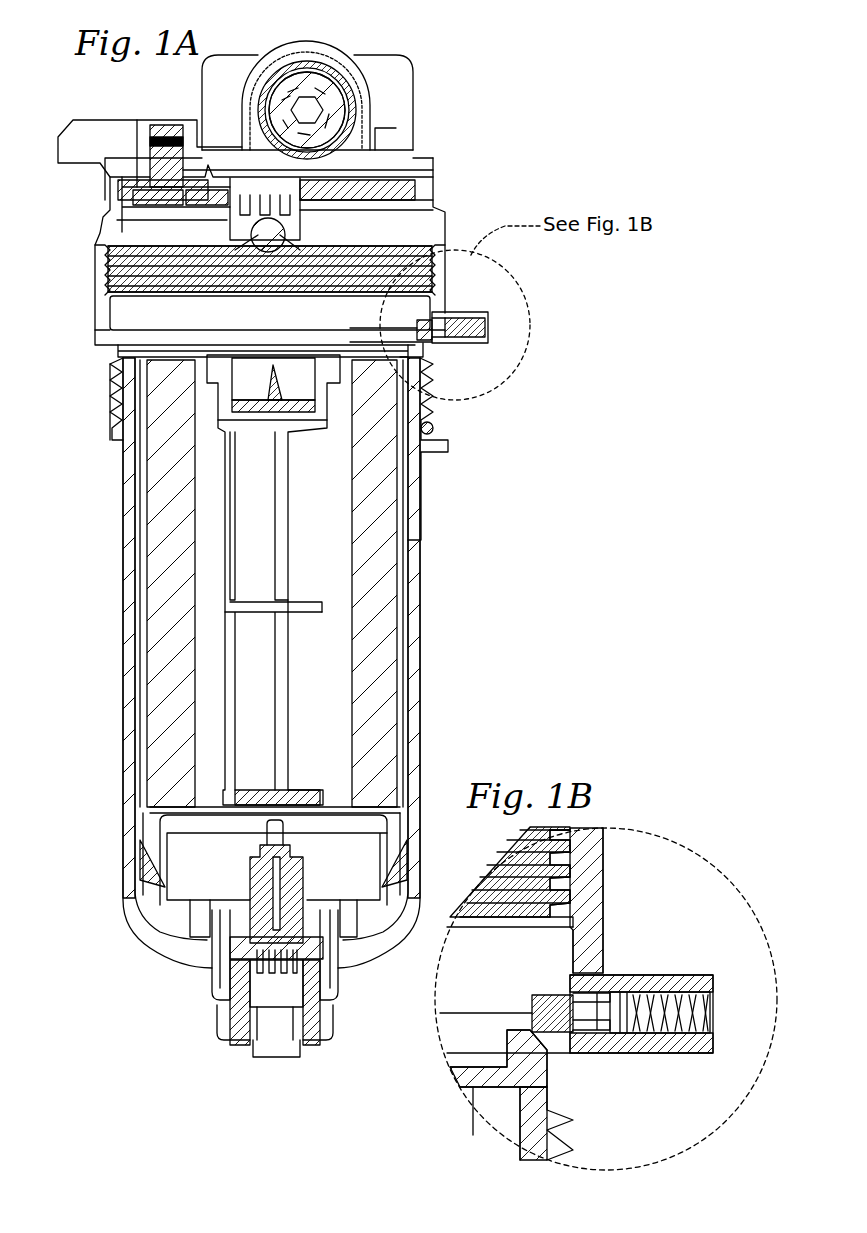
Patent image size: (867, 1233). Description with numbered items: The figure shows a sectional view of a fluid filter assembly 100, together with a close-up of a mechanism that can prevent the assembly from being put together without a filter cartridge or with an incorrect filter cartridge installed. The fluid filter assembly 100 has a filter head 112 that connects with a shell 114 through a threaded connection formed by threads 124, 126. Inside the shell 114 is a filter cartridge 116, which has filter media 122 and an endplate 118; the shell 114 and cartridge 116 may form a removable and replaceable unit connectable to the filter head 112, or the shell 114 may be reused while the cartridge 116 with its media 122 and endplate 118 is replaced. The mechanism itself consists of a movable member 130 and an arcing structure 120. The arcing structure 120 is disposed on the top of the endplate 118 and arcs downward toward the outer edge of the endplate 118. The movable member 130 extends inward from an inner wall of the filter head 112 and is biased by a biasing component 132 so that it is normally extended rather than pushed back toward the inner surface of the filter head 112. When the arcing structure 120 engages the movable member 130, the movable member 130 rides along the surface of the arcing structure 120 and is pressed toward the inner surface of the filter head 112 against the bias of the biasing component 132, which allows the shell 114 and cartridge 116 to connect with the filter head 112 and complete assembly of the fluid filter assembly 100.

In FIG. 1A, the fluid filter assembly 100 is at (522, 172).
In FIG. 1A, the filter head 112 is at (433, 165).
In FIG. 1A, the shell 114 is at (420, 600).
In FIG. 1A, the filter cartridge 116 is at (452, 542).
In FIG. 1A, the endplate 118 is at (115, 347).
In FIG. 1A, the arcing structure 120 is at (445, 372).
In FIG. 1B, the arcing structure 120 is at (560, 1075).
In FIG. 1A, the filter media 122 is at (410, 652).
In FIG. 1A, the threads 124 is at (110, 400).
In FIG. 1A, the threads 126 is at (130, 302).
In FIG. 1A, the movable member 130 is at (430, 320).
In FIG. 1B, the movable member 130 is at (603, 945).
In FIG. 1A, the biasing component 132 is at (488, 324).
In FIG. 1B, the biasing component 132 is at (690, 975).